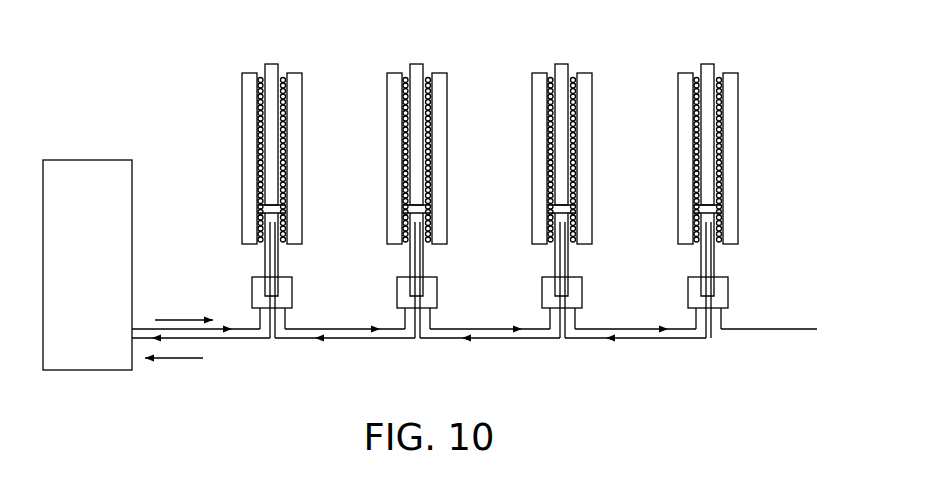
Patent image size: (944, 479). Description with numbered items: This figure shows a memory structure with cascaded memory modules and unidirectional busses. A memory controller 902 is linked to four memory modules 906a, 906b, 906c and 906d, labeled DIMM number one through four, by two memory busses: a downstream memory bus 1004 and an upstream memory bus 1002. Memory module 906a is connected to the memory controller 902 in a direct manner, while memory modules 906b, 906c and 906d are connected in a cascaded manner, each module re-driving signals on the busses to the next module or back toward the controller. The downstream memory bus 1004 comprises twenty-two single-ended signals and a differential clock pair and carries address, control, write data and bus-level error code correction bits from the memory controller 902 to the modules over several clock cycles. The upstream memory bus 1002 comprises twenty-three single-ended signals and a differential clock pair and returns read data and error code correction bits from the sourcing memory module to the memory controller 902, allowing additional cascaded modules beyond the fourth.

The memory controller 902 is at (100, 160).
The memory module 906a is at (302, 134).
The memory module 906b is at (447, 134).
The memory module 906c is at (592, 134).
The memory module 906d is at (739, 134).
The upstream memory bus 1002 is at (252, 339).
The downstream memory bus 1004 is at (213, 330).